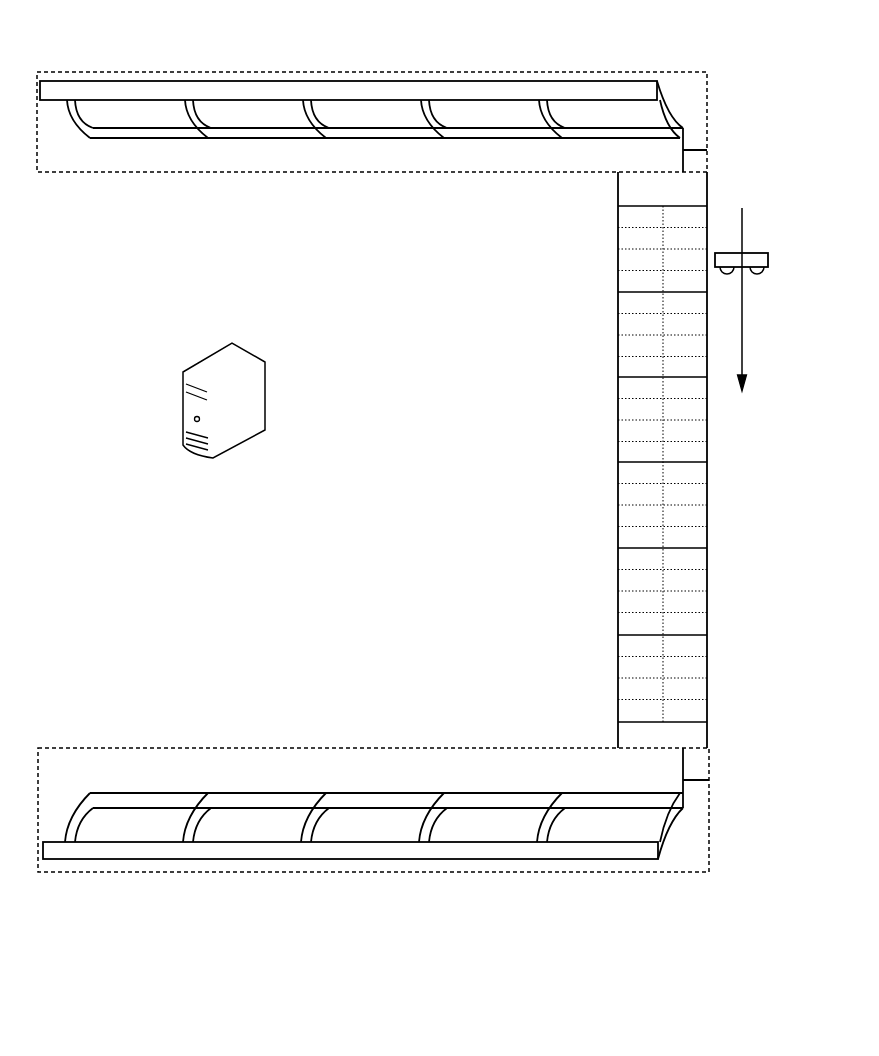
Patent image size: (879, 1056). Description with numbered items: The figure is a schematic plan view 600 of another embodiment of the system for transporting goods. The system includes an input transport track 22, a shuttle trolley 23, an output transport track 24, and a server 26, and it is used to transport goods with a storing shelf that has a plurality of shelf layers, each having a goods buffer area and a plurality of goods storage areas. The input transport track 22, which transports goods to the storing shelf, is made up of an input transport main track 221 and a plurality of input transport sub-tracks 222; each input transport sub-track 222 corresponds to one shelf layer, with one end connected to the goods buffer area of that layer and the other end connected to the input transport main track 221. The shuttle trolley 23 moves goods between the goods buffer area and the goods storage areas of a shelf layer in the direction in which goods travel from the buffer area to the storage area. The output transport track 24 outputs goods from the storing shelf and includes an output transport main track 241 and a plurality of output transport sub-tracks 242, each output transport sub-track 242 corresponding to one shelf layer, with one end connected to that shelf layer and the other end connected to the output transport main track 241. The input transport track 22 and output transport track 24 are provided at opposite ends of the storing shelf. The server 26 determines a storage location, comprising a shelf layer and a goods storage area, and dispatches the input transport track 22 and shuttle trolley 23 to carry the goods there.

The schematic plan view 600 is at (808, 27).
The input transport track 22 is at (496, 74).
The input transport main track 221 is at (329, 91).
The input transport sub-track 222 is at (300, 128).
The shuttle trolley 23 is at (764, 252).
The output transport track 24 is at (337, 873).
The output transport main track 241 is at (247, 853).
The output transport sub-track 242 is at (372, 805).
The server 26 is at (224, 421).